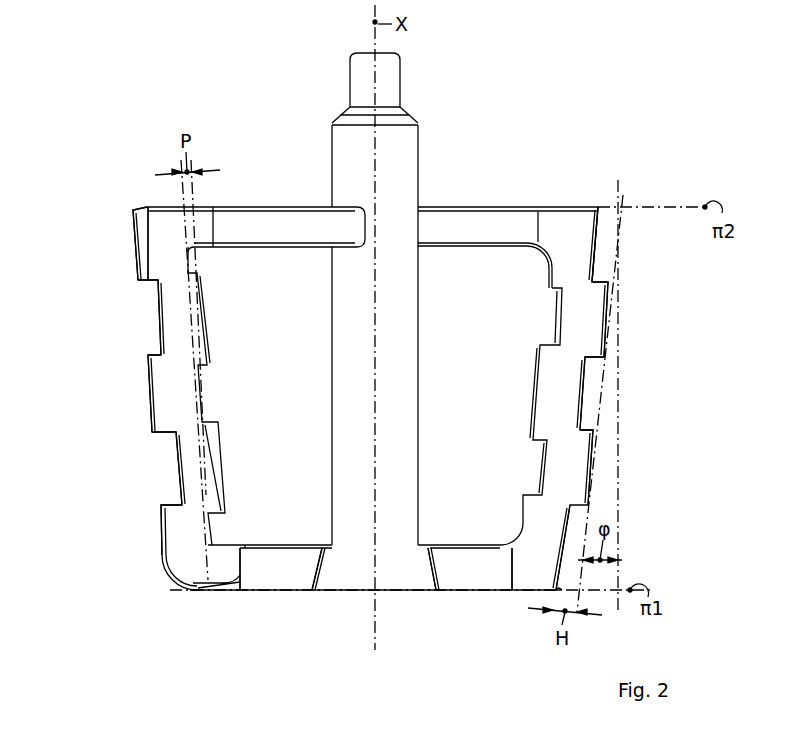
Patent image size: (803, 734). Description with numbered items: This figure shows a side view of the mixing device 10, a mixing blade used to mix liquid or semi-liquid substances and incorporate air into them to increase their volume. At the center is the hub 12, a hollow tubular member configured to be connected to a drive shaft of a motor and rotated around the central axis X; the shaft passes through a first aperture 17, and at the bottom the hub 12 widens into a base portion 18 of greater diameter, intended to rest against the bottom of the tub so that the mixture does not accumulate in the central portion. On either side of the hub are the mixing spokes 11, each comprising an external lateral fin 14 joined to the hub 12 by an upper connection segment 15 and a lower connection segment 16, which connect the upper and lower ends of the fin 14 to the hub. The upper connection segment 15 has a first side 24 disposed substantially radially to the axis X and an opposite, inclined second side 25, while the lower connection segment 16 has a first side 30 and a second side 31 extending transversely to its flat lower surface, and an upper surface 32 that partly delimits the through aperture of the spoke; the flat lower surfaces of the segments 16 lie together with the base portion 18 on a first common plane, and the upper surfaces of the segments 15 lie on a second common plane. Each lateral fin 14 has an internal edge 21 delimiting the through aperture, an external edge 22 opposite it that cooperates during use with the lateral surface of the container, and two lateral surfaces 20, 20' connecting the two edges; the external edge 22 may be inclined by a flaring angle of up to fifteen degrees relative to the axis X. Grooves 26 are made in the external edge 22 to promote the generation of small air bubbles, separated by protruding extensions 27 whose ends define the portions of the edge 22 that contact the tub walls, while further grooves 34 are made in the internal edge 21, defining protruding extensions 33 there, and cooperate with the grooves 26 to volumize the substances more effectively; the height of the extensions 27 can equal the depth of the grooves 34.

The mixing device 10 is at (622, 115).
The mixing spokes 11 is at (124, 194).
The hub 12 is at (360, 73).
The external lateral fin 14 is at (195, 560).
The upper connection segment 15 is at (283, 209).
The lower connection segment 16 is at (277, 577).
The first aperture 17 is at (402, 590).
The base portion 18 is at (345, 573).
The lateral surface 20 is at (117, 237).
The lateral surface 20' is at (627, 258).
The internal edge 21 is at (206, 330).
The external edge 22 is at (151, 410).
The first side 24 is at (458, 228).
The second side 25 is at (276, 228).
The grooves 26 is at (159, 325).
The protruding extensions 27 is at (135, 246).
The first side 30 is at (451, 563).
The second side 31 is at (293, 563).
The upper surface 32 is at (270, 545).
The protruding extensions 33 is at (202, 297).
The further grooves 34 is at (199, 385).